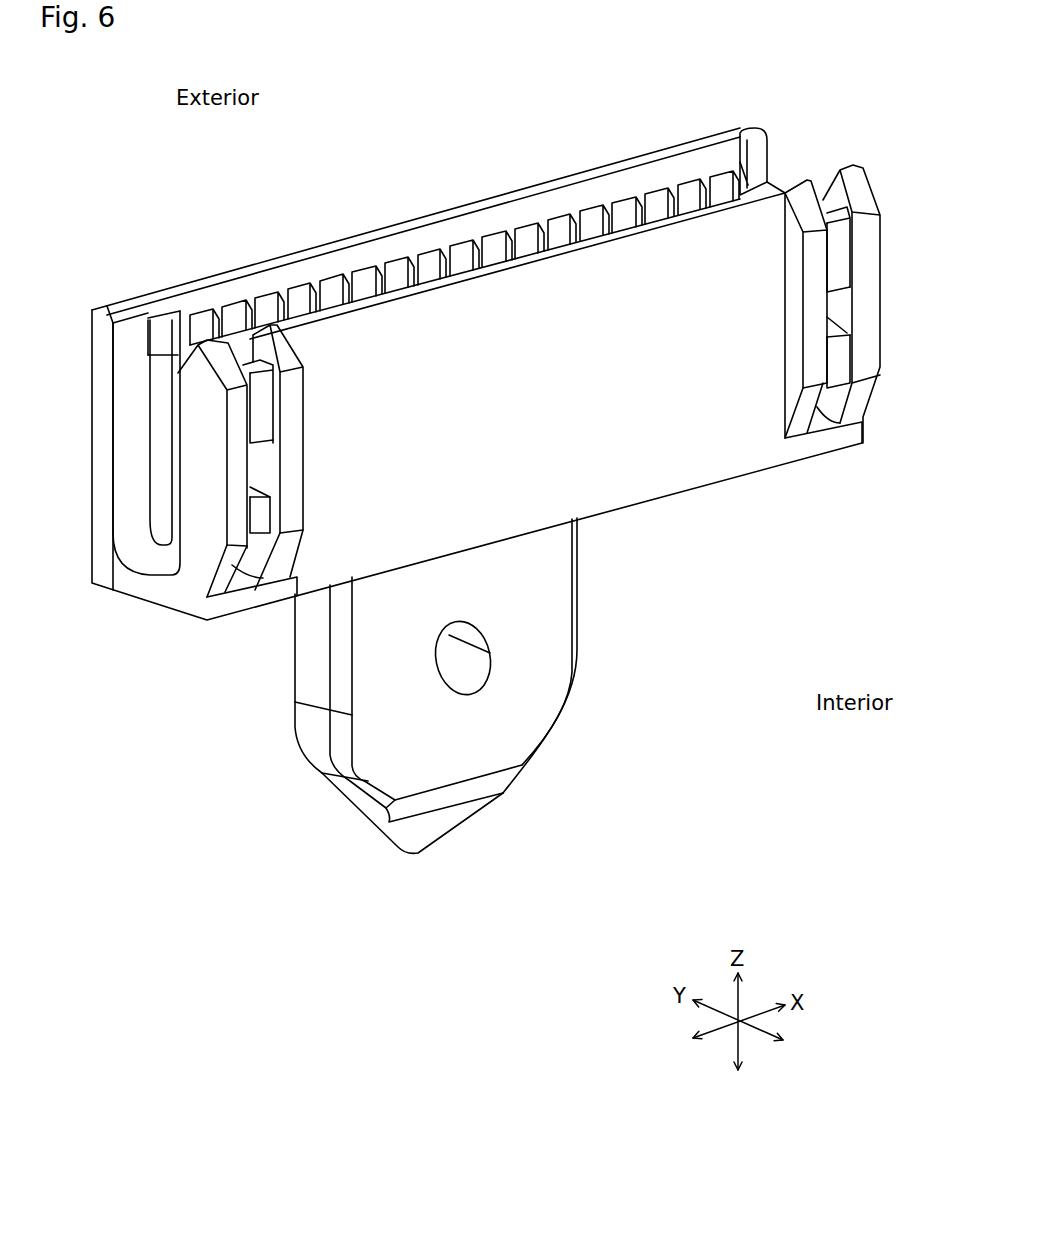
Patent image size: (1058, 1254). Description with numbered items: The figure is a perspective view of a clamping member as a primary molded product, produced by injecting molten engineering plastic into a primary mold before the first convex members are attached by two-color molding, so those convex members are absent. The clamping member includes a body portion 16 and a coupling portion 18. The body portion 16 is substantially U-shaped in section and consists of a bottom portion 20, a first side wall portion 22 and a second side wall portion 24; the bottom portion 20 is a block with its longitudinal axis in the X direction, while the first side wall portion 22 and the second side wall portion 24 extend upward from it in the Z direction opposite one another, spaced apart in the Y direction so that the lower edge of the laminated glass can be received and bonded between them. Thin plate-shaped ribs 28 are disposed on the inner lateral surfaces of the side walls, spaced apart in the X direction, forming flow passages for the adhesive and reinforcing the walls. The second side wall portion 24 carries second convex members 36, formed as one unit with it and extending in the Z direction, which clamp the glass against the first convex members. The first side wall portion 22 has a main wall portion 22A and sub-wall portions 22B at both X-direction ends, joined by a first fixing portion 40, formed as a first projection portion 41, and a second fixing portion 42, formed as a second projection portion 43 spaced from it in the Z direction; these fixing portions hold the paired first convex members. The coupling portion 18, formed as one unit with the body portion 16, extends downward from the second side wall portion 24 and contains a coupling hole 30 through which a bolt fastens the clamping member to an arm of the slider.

The body portion 16 is at (512, 178).
The coupling portion 18 is at (590, 652).
The bottom portion 20 is at (133, 585).
The first side wall portion 22 is at (657, 258).
The main wall portion 22A is at (657, 445).
The sub-wall portion 22B is at (200, 478).
The second side wall portion 24 is at (450, 216).
The ribs 28 is at (365, 270).
The coupling hole 30 is at (465, 677).
The second convex members 36 is at (170, 332).
The first fixing portion 40 is at (258, 395).
The first projection portion 41 is at (262, 418).
The second fixing portion 42 is at (268, 492).
The second projection portion 43 is at (262, 518).